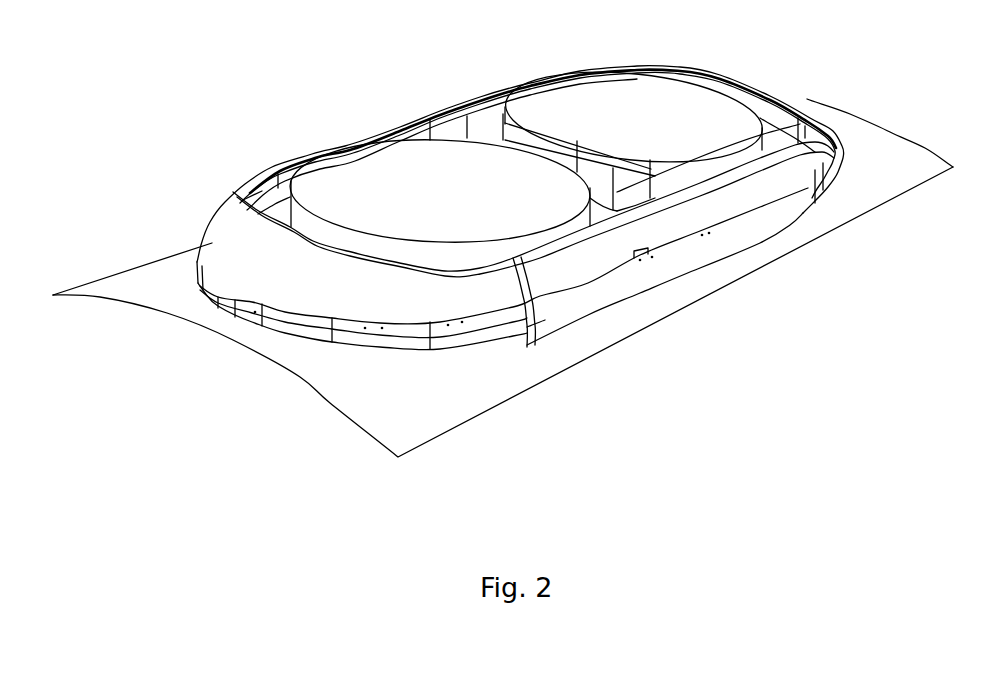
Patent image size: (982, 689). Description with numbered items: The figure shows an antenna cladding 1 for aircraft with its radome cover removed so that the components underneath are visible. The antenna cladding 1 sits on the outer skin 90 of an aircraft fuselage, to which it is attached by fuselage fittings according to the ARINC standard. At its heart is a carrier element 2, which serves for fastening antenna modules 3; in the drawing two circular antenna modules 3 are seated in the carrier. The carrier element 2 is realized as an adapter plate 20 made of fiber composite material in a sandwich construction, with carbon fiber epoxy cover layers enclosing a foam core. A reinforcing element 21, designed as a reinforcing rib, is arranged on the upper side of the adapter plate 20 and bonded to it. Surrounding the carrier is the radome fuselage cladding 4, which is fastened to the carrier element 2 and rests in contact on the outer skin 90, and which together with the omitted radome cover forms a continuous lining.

The antenna cladding 1 is at (466, 178).
The carrier element 2 is at (258, 183).
The adapter plate 20 is at (280, 190).
The reinforcing element 21 is at (440, 118).
The antenna module 3 is at (362, 170).
The radome fuselage cladding 4 is at (213, 229).
The outer skin 90 is at (895, 155).